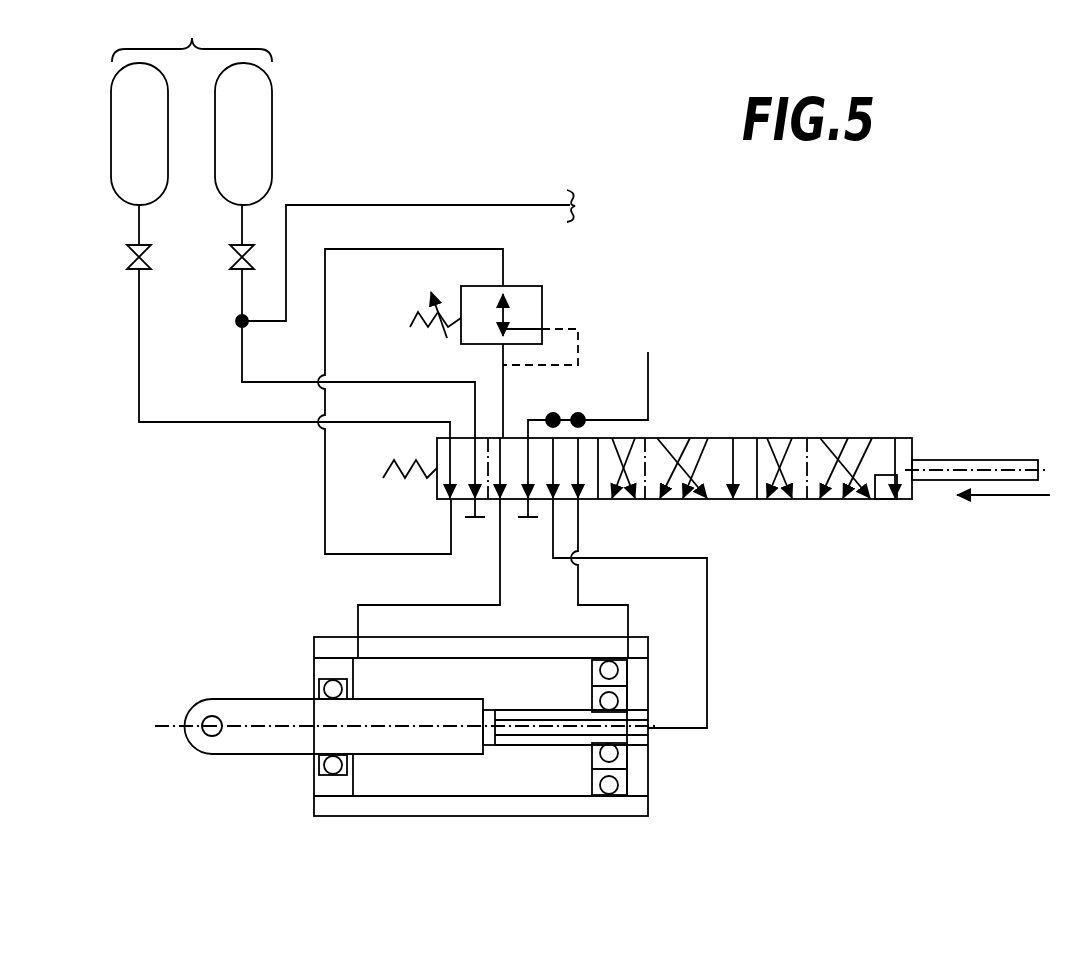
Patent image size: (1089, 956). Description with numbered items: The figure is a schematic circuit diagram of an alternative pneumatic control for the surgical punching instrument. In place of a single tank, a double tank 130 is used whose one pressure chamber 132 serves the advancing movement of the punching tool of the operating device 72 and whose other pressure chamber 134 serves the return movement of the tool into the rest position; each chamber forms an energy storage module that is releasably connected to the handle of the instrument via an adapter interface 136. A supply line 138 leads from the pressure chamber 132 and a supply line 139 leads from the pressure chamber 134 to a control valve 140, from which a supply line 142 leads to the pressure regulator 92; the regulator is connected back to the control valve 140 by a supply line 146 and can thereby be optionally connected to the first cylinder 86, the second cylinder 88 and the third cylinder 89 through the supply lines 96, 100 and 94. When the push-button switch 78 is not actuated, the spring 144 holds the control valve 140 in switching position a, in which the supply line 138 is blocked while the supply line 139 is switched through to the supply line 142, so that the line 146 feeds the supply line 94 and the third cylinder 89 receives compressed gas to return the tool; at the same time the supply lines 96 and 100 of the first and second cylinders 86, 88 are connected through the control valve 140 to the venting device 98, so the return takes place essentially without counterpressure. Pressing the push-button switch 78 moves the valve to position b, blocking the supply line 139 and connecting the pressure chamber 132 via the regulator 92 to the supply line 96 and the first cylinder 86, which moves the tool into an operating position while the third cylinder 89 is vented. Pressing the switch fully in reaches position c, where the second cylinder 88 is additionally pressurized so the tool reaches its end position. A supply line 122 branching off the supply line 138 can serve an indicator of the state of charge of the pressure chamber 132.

The operating device 72 is at (284, 768).
The push-button switch 78 is at (994, 454).
The first cylinder 86 is at (500, 736).
The second cylinder 88 is at (627, 690).
The third cylinder 89 is at (480, 768).
The pressure regulator 92 is at (540, 300).
The supply line 94 is at (410, 603).
The supply line 96 is at (708, 616).
The venting device 98 is at (649, 352).
The supply line 100 is at (628, 620).
The supply line 122 is at (453, 205).
The double tank 130 is at (187, 126).
The pressure chamber 132 is at (255, 118).
The pressure chamber 134 is at (120, 118).
The adapter interface 136 is at (232, 257).
The supply line 138 is at (241, 350).
The supply line 139 is at (215, 424).
The control valve 140 is at (805, 432).
The supply line 142 is at (322, 519).
The spring 144 is at (398, 478).
The supply line 146 is at (500, 349).